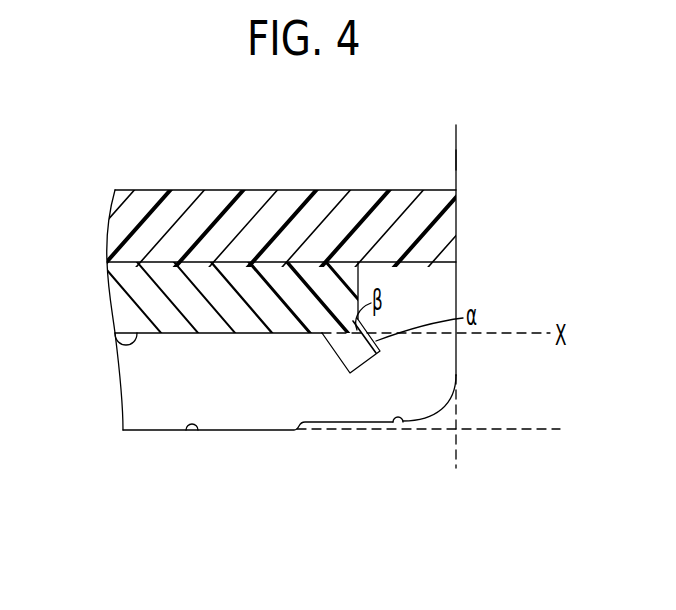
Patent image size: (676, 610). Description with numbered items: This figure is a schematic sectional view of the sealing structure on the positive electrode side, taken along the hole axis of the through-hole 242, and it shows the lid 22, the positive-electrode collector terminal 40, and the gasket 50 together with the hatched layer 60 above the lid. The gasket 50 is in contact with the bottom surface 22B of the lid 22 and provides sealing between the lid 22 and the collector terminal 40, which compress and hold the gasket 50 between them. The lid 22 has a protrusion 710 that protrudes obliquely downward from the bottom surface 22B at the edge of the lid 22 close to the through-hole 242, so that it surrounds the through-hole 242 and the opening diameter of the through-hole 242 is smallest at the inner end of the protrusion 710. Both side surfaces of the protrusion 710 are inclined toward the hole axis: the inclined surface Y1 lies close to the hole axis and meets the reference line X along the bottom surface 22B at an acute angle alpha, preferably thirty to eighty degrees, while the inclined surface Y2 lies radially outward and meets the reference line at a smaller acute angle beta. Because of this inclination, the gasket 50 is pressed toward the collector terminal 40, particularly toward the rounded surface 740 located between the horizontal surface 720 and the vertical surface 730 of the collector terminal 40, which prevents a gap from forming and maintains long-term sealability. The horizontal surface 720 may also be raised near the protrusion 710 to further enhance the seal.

The outer hatched layer 60 is at (188, 190).
The lid 22 is at (122, 298).
The bottom surface 22B is at (116, 338).
The gasket 50 is at (130, 398).
The vertical surface 730 is at (456, 131).
The positive-electrode collector terminal 40 is at (441, 161).
The through-hole 242 is at (398, 273).
The protrusion 710 is at (342, 353).
The horizontal surface 720 is at (193, 432).
The rounded surface 740 is at (398, 424).
The inclined surface Y1 is at (376, 341).
The inclined surface Y2 is at (347, 369).